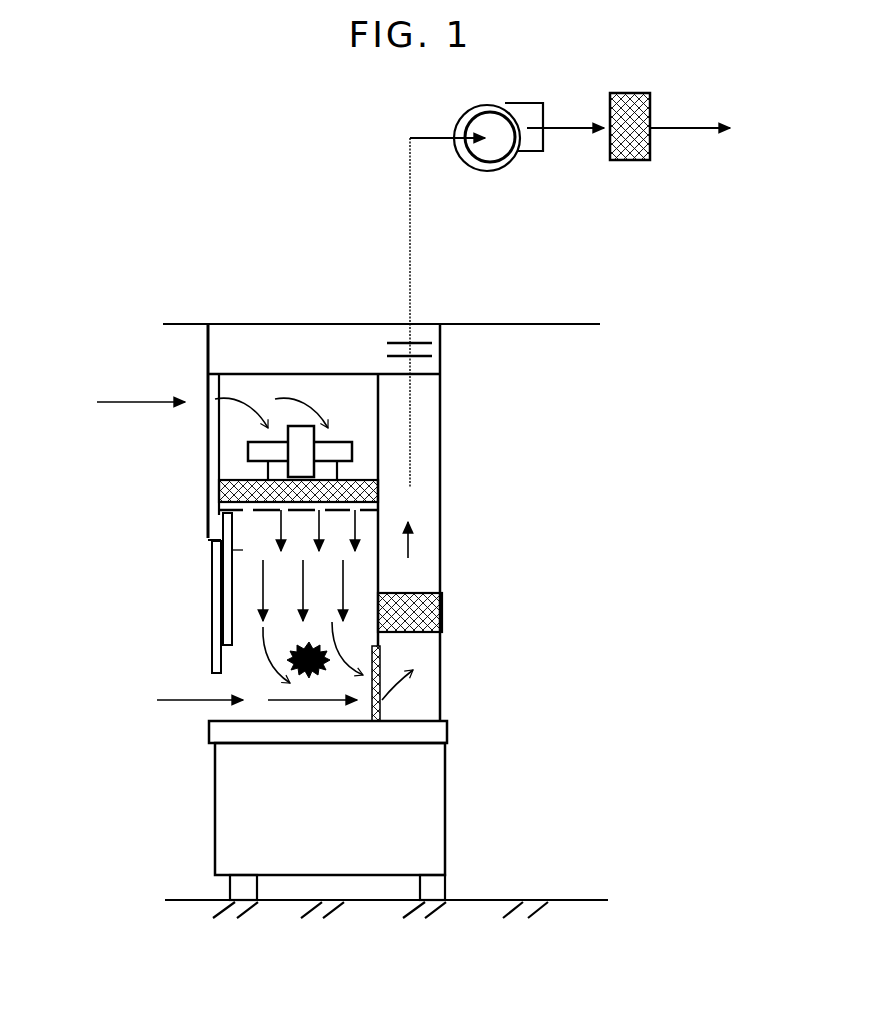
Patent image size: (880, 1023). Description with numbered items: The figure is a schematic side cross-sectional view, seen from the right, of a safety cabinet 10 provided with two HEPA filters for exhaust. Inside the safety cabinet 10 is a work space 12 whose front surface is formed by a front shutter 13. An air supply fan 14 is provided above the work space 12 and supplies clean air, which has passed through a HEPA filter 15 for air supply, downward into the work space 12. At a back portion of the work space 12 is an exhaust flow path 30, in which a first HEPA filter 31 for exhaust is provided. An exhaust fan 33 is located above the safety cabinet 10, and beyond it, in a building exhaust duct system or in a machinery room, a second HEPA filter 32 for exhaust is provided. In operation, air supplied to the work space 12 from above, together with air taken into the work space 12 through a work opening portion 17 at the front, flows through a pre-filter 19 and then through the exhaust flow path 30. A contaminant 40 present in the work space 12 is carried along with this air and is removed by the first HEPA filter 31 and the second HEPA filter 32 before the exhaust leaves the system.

The safety cabinet 10 is at (253, 317).
The work space 12 is at (223, 540).
The front shutter 13 is at (212, 592).
The air supply fan 14 is at (247, 452).
The HEPA filter for air supply 15 is at (213, 493).
The work opening portion 17 is at (210, 688).
The pre-filter 19 is at (380, 667).
The exhaust flow path 30 is at (427, 503).
The first HEPA filter for exhaust 31 is at (425, 608).
The second HEPA filter for exhaust 32 is at (630, 160).
The exhaust fan 33 is at (490, 173).
The contaminant 40 is at (290, 657).